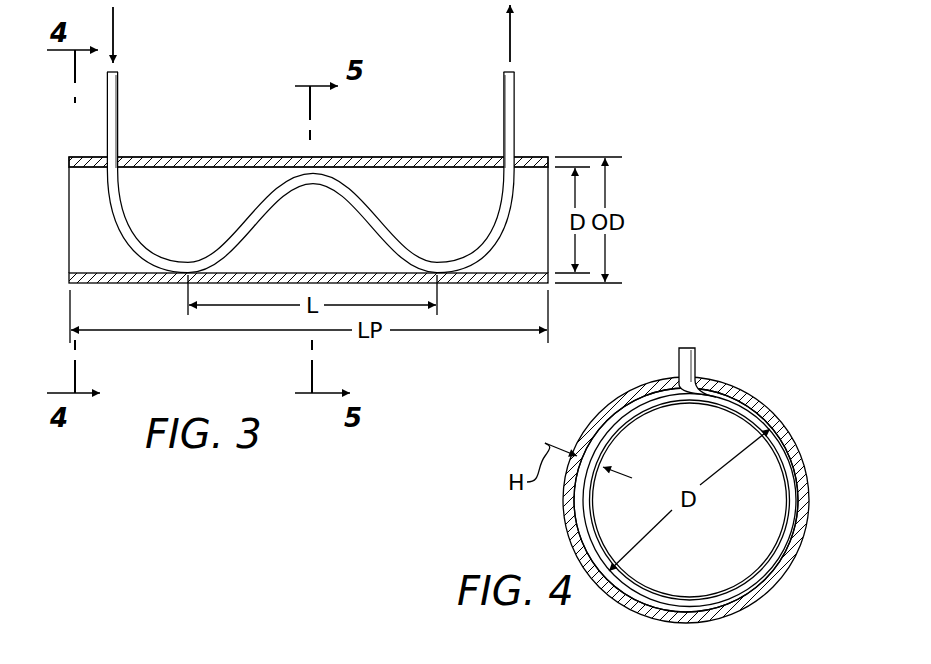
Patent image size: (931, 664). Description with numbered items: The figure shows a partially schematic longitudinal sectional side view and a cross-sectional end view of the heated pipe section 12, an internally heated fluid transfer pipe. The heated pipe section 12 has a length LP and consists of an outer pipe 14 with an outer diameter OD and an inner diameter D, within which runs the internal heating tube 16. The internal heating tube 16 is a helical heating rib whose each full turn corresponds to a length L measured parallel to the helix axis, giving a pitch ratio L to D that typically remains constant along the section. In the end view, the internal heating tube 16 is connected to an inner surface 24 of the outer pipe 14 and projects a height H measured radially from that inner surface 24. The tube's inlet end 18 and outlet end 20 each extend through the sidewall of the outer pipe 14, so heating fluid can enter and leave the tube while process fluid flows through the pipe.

In FIG. 3, the heated pipe section 12 is at (425, 150).
In FIG. 3, the outer pipe 14 is at (207, 157).
In FIG. 4, the outer pipe 14 is at (795, 432).
In FIG. 3, the internal heating tube 16 is at (377, 216).
In FIG. 4, the internal heating tube 16 is at (733, 405).
In FIG. 3, the inlet end 18 is at (120, 122).
In FIG. 4, the inlet end 18 is at (697, 360).
In FIG. 3, the outlet end 20 is at (517, 123).
In FIG. 4, the inner surface 24 is at (803, 487).